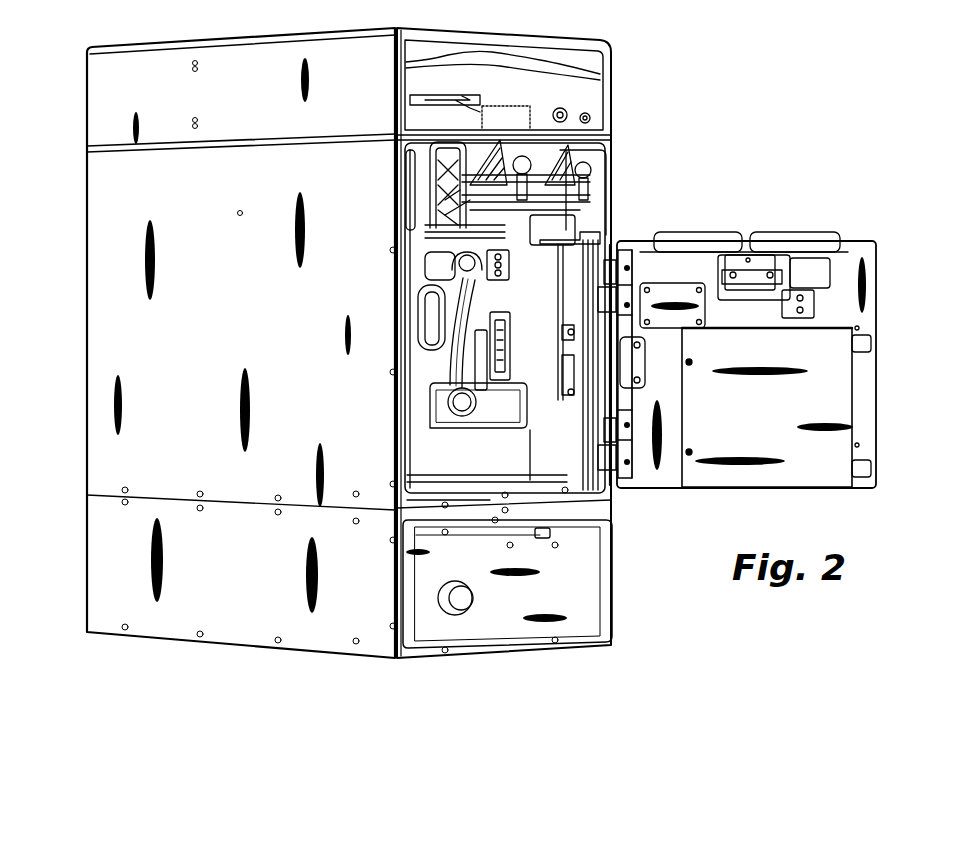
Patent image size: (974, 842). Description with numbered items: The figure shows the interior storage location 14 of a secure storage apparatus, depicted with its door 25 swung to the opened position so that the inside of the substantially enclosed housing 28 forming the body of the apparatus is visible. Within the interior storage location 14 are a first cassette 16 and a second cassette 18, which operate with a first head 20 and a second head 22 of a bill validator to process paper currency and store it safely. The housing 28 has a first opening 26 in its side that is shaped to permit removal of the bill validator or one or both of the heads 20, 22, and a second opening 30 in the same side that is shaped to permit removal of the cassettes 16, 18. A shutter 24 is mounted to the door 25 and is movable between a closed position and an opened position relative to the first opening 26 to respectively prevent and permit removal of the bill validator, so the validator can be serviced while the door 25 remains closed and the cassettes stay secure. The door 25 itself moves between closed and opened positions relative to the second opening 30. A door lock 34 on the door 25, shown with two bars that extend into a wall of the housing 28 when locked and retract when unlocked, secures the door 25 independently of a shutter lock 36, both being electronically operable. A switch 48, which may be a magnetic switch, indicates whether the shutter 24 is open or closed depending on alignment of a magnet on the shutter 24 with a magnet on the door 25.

The interior storage location 14 is at (555, 470).
The first cassette 16 is at (415, 400).
The second cassette 18 is at (477, 405).
The first head 20 is at (497, 145).
The second head 22 is at (575, 160).
The shutter 24 is at (783, 232).
The door 25 is at (877, 297).
The first opening 26 is at (580, 230).
The housing 28 is at (338, 632).
The second opening 30 is at (598, 483).
The door lock 34 is at (785, 450).
The shutter lock 36 is at (673, 296).
The switch 48 is at (813, 275).